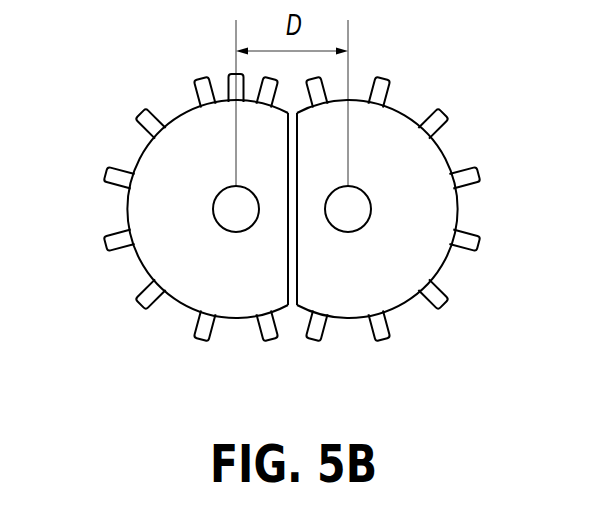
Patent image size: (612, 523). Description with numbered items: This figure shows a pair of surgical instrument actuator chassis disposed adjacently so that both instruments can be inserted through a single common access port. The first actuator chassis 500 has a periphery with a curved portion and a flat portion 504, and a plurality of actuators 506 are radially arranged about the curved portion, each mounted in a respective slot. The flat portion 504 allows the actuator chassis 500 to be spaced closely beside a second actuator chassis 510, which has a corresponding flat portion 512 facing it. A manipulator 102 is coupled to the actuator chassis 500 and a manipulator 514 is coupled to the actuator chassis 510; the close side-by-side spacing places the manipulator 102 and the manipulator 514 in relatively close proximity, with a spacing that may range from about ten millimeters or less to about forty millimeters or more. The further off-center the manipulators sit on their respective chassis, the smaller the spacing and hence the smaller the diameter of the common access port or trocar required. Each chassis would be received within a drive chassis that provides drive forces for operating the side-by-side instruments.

The actuator chassis 500 is at (125, 86).
The second actuator chassis 510 is at (484, 86).
The actuators 506 is at (100, 173).
The manipulator 102 is at (235, 232).
The manipulator 514 is at (348, 232).
The flat portion 504 is at (289, 305).
The flat portion 512 is at (297, 305).